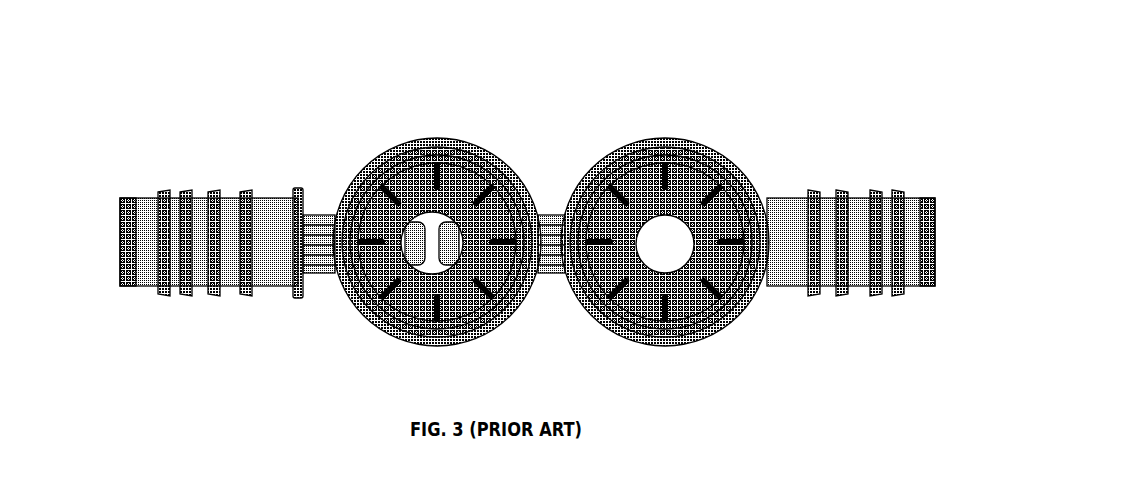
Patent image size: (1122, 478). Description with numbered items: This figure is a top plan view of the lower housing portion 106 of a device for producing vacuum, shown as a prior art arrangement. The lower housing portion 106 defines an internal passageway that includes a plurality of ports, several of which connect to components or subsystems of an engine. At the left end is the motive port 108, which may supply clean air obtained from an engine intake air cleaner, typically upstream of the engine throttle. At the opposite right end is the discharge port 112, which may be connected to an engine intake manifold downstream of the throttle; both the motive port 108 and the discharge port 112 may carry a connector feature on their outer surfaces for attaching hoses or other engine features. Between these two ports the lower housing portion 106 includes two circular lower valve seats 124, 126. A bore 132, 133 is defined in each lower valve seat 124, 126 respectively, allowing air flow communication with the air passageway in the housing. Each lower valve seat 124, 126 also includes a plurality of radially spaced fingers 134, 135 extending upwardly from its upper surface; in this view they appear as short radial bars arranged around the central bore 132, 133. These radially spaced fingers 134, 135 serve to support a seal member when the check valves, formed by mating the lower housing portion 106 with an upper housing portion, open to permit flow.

The lower housing portion 106 is at (514, 219).
The motive port 108 is at (128, 200).
The discharge port 112 is at (925, 200).
The lower valve seat 124 is at (424, 239).
The lower valve seat 126 is at (669, 239).
The bore 132 is at (410, 222).
The bore 133 is at (647, 220).
The radially spaced fingers 134 is at (478, 190).
The radially spaced fingers 135 is at (702, 205).